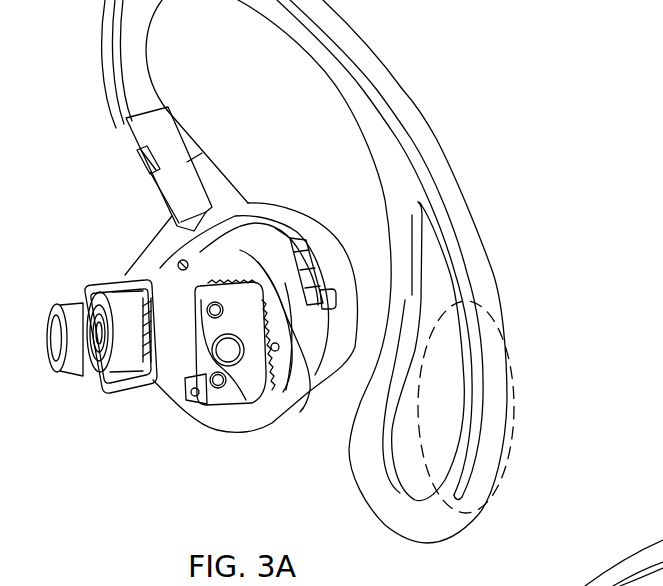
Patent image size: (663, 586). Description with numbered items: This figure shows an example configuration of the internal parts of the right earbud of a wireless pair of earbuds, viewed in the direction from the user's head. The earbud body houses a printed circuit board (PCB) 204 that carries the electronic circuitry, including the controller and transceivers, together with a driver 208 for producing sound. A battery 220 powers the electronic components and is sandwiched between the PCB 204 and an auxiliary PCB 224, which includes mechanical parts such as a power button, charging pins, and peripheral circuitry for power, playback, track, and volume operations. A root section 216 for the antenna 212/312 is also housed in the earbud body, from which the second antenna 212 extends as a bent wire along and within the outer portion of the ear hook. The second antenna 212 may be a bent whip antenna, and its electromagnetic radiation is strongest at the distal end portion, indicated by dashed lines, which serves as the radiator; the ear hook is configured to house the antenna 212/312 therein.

The printed circuit board 204 is at (280, 240).
The driver 208 is at (123, 297).
The second antenna 212 is at (351, 271).
The antenna 312 is at (475, 268).
The root section 216 is at (122, 128).
The battery 220 is at (307, 353).
The auxiliary PCB 224 is at (172, 355).